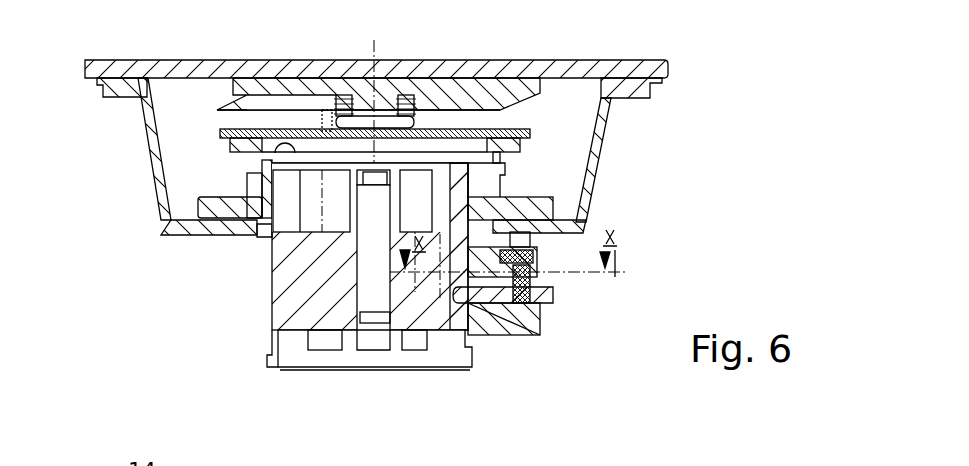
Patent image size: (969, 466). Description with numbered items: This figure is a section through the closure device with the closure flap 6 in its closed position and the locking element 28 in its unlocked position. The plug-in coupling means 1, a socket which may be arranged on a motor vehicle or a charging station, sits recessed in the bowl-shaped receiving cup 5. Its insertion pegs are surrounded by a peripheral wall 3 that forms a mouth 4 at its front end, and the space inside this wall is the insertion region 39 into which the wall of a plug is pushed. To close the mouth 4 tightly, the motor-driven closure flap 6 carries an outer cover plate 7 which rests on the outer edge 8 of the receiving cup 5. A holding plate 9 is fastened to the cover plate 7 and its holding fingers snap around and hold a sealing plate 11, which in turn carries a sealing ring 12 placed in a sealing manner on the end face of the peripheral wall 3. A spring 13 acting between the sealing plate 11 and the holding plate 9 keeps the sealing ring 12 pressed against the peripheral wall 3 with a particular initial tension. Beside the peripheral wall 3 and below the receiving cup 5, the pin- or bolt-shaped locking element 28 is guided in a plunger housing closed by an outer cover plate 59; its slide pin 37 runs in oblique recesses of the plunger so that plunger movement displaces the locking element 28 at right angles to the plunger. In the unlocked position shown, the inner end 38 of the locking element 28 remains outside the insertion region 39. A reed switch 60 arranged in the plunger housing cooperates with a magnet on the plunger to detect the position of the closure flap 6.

The plug-in coupling means 1 is at (308, 267).
The peripheral wall 3 is at (500, 163).
The mouth 4 is at (280, 146).
The receiving cup 5 is at (155, 172).
The closure flap 6 is at (569, 55).
The cover plate 7 is at (522, 68).
The outer edge 8 is at (640, 92).
The holding plate 9 is at (462, 85).
The sealing plate 11 is at (530, 133).
The sealing ring 12 is at (520, 154).
The spring 13 is at (343, 80).
The locking element 28 is at (505, 310).
The slide pin 37 is at (540, 312).
The inner end 38 is at (467, 300).
The insertion region 39 is at (455, 345).
The outer cover plate 59 is at (540, 328).
The reed switch 60 is at (540, 261).